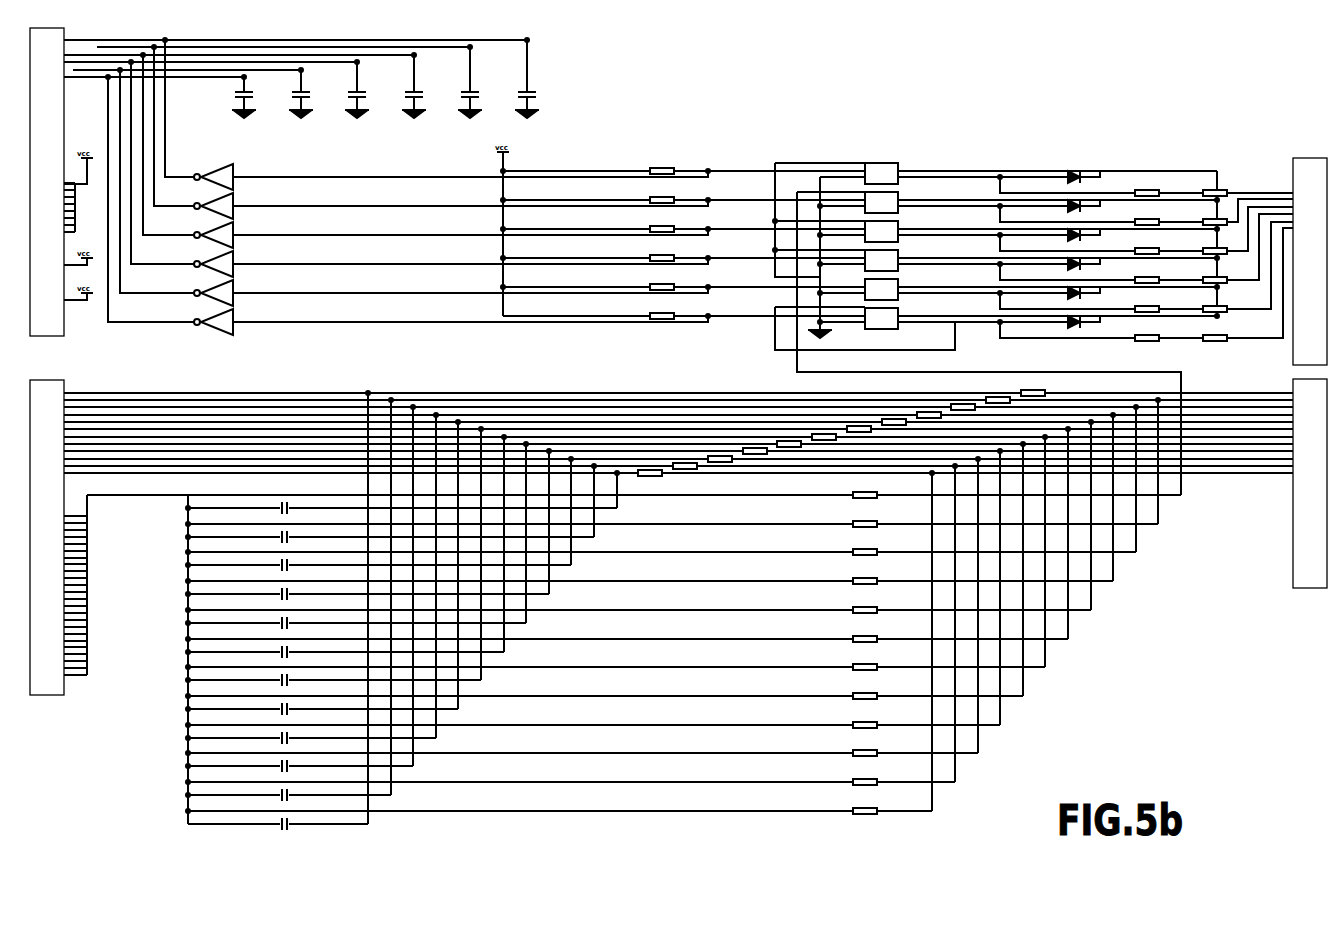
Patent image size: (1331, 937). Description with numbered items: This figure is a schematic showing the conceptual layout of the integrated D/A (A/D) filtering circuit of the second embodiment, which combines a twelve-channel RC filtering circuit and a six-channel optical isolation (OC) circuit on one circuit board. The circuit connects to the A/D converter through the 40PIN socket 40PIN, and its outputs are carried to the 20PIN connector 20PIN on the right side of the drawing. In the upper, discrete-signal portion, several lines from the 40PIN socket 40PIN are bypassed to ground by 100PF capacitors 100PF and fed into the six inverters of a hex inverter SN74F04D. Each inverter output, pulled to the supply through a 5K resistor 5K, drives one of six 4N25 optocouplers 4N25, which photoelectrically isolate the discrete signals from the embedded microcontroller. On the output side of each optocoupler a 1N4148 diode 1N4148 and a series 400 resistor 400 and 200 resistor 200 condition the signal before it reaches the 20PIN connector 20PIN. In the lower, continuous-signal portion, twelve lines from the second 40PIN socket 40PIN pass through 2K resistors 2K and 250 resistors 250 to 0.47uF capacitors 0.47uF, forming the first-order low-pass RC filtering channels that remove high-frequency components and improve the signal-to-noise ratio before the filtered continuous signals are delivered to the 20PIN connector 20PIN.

The 40PIN socket 40PIN is at (47, 355).
The 20-pin connector 20PIN is at (1310, 366).
The 100 pF capacitor 100PF is at (406, 78).
The hex inverter SN74F04D is at (451, 249).
The 5K resistor 5K is at (683, 234).
The 4N25 optocoupler 4N25 is at (977, 319).
The 1N4148 diode 1N4148 is at (1058, 238).
The 400 ohm resistor 400 is at (1101, 259).
The 200 ohm resistor 200 is at (1248, 259).
The 2K resistor 2K is at (869, 427).
The 250 ohm resistor 250 is at (634, 652).
The 0.47 uF capacitor 0.47uF is at (402, 664).